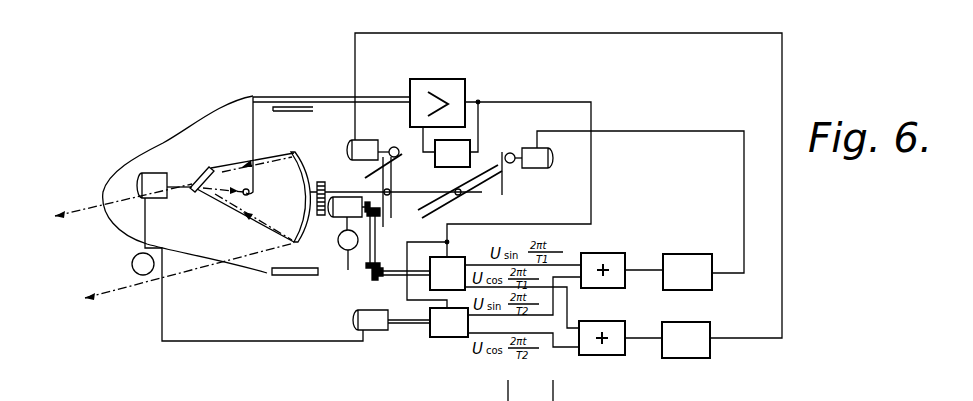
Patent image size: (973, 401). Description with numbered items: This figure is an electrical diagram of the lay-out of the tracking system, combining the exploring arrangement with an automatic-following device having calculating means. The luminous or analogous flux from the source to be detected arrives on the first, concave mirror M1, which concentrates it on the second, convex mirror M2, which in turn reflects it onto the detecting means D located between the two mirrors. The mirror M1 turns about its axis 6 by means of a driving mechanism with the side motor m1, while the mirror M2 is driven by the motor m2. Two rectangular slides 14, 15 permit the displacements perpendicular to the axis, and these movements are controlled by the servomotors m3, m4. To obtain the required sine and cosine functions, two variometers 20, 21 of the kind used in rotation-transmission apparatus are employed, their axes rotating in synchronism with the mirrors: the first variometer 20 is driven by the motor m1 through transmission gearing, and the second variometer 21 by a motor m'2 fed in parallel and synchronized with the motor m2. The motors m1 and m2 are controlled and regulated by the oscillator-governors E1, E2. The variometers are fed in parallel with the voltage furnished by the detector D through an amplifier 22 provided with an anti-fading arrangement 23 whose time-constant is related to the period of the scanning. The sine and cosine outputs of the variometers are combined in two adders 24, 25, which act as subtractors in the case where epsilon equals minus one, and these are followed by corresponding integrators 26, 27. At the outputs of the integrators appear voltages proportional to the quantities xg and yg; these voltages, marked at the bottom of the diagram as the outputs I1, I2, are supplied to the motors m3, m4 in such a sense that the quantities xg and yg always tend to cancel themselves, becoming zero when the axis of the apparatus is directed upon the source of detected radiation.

The axis 6 is at (414, 192).
The rectangular slide 14 is at (392, 176).
The rectangular slide 15 is at (450, 205).
The variometer 20 is at (453, 266).
The variometer 21 is at (443, 331).
The amplifier 22 is at (450, 86).
The anti-fading arrangement 23 is at (457, 157).
The adder 24 is at (612, 253).
The adder 25 is at (617, 353).
The integrator 26 is at (681, 256).
The integrator 27 is at (702, 349).
The motor m1 is at (340, 215).
The motor m2 is at (150, 177).
The servomotor m3 is at (367, 145).
The servomotor m4 is at (545, 165).
The motor m'2 is at (373, 332).
The concave mirror M1 is at (304, 165).
The convex mirror M2 is at (205, 172).
The detecting means D is at (254, 199).
The oscillator-governor E1 is at (347, 264).
The oscillator-governor E2 is at (126, 267).
The output signal I1 is at (565, 390).
The output signal I2 is at (520, 390).